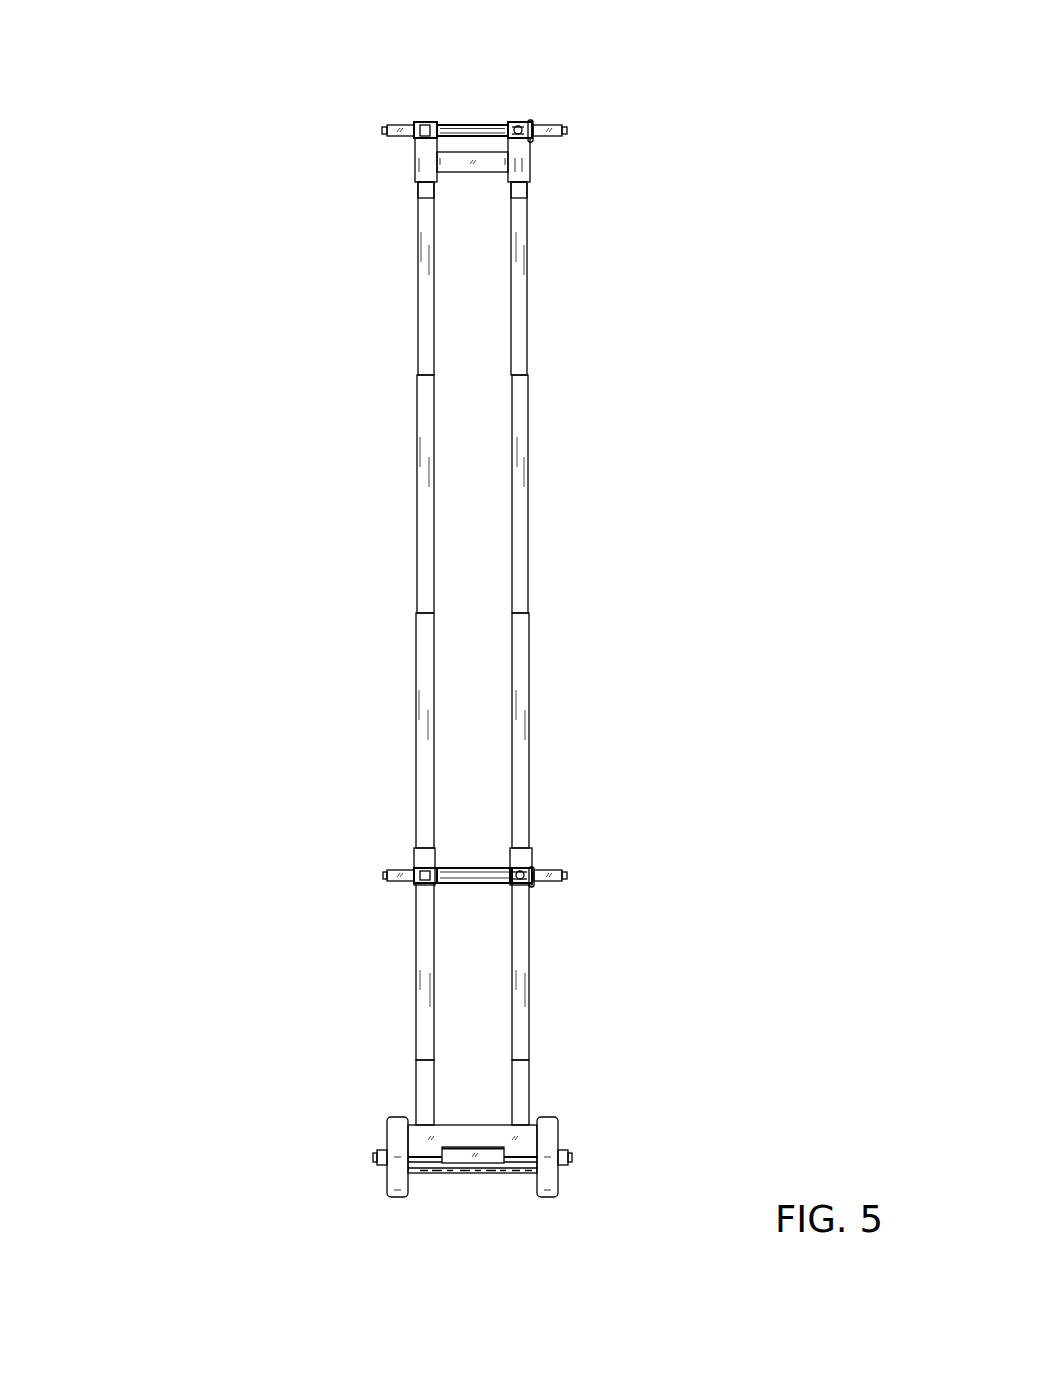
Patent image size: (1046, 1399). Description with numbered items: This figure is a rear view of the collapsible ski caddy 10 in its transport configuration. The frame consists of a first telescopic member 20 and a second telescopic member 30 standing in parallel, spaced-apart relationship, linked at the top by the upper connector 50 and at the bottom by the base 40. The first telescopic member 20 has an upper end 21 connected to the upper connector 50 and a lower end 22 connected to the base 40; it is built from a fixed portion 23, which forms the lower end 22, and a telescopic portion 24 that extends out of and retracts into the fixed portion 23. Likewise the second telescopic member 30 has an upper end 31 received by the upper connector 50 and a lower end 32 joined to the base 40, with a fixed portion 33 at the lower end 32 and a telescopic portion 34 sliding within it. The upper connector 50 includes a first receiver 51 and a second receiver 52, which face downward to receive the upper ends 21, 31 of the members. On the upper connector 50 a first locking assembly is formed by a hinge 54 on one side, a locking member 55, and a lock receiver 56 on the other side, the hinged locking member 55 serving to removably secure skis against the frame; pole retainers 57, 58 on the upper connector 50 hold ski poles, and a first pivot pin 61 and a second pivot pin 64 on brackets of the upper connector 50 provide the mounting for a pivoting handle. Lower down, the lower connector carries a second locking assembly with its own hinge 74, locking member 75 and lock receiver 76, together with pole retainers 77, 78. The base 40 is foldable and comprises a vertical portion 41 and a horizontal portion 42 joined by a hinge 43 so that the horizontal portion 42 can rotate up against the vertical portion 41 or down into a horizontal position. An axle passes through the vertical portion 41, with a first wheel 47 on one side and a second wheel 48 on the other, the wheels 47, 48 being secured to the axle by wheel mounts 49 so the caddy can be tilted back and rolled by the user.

The collapsible ski caddy 10 is at (168, 131).
The first telescopic member 20 is at (402, 661).
The upper end 21 is at (417, 190).
The lower end 22 is at (416, 1107).
The fixed portion 23 is at (416, 1030).
The telescopic portion 24 is at (417, 510).
The second telescopic member 30 is at (545, 662).
The upper end 31 is at (528, 200).
The lower end 32 is at (530, 1108).
The fixed portion 33 is at (530, 1006).
The telescopic portion 34 is at (530, 525).
The base 40 is at (479, 1112).
The vertical portion 41 is at (433, 1148).
The horizontal portion 42 is at (470, 1170).
The hinge 43 is at (490, 1155).
The first wheel 47 is at (385, 1137).
The second wheel 48 is at (558, 1132).
The wheel mounts 49 is at (375, 1157).
The upper connector 50 is at (465, 150).
The first receiver 51 is at (415, 182).
The second receiver 52 is at (530, 193).
The hinge 54 is at (423, 127).
The locking member 55 is at (448, 128).
The lock receiver 56 is at (513, 128).
The pole retainer 57 is at (400, 125).
The pole retainer 58 is at (552, 120).
The first pivot pin 61 is at (413, 162).
The second pivot pin 64 is at (533, 160).
The hinge 74 is at (427, 884).
The locking member 75 is at (450, 866).
The lock receiver 76 is at (523, 868).
The pole retainer 77 is at (382, 876).
The pole retainer 78 is at (562, 878).